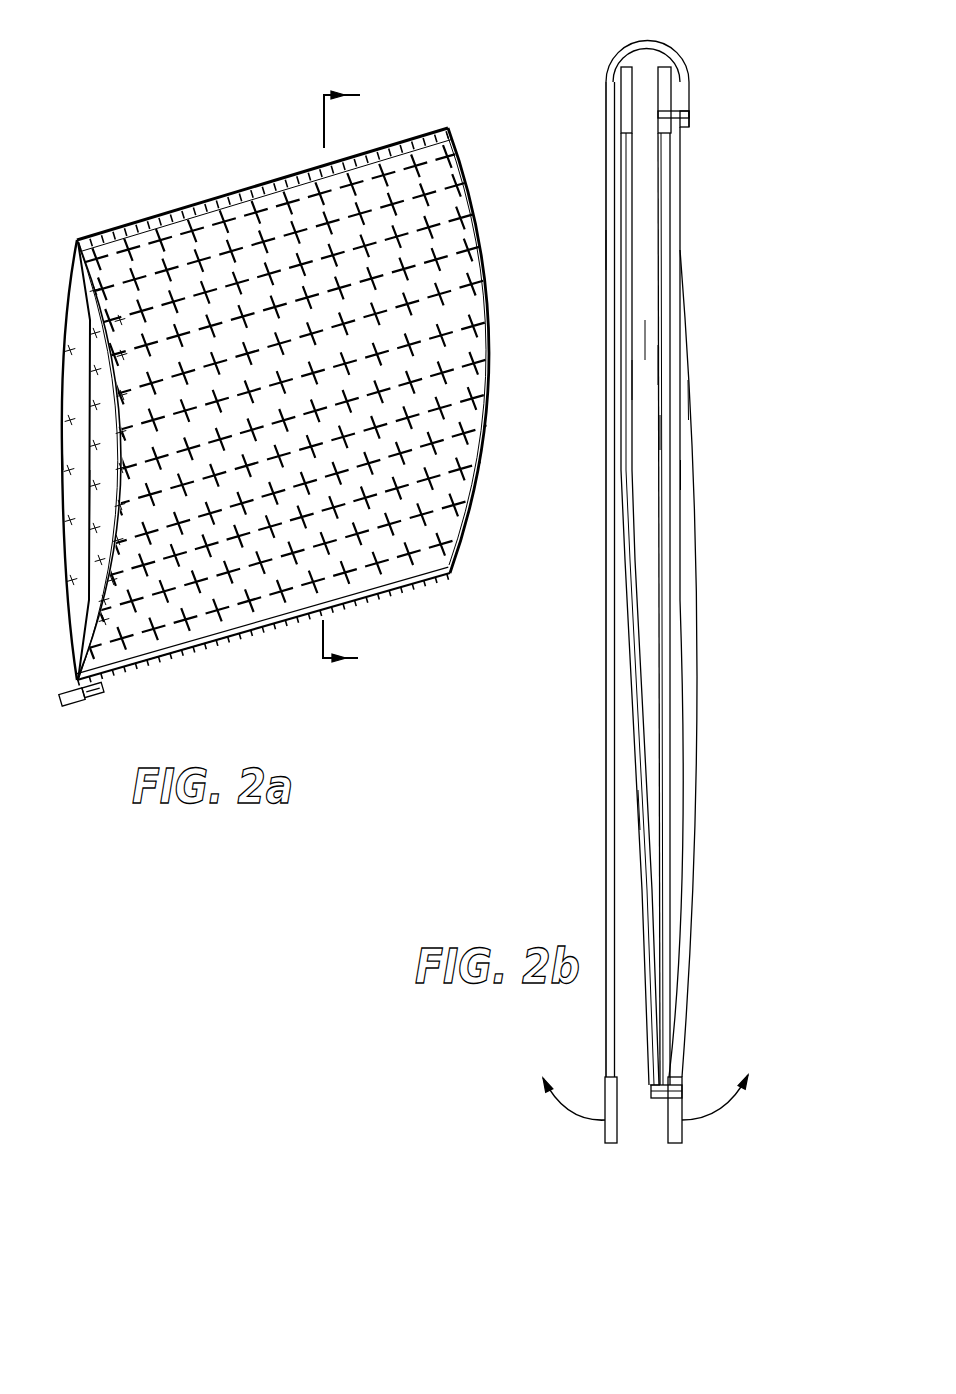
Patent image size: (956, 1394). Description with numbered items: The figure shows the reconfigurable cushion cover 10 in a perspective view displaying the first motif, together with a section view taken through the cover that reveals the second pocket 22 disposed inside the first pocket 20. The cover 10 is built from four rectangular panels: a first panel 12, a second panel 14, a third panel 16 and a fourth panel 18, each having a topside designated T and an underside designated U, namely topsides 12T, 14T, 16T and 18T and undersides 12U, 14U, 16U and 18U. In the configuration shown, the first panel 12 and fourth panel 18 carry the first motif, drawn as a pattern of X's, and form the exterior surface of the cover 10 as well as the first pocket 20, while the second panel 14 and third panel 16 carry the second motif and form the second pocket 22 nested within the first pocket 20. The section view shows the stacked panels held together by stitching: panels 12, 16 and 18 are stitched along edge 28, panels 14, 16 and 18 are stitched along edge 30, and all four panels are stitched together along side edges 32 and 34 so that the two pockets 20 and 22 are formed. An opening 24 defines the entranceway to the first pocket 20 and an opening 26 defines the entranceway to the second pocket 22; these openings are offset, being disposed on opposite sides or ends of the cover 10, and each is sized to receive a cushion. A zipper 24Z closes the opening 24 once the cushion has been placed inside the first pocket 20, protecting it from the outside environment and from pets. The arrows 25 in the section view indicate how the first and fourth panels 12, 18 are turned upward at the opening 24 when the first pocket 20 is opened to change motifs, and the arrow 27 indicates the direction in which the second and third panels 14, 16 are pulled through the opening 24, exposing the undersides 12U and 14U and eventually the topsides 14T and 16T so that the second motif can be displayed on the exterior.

In FIG. 2a, the cover 10 is at (83, 208).
In FIG. 2a, the first panel 12 is at (62, 393).
In FIG. 2b, the first panel 12 is at (612, 462).
In FIG. 2a, the topside of first panel 12T is at (62, 443).
In FIG. 2b, the topside of first panel 12T is at (607, 252).
In FIG. 2b, the underside of first panel 12U is at (620, 337).
In FIG. 2b, the second panel 14 is at (638, 710).
In FIG. 2b, the topside of second panel 14T is at (634, 397).
In FIG. 2b, the underside of second panel 14U is at (637, 800).
In FIG. 2b, the third panel 16 is at (663, 603).
In FIG. 2b, the topside of third panel 16T is at (658, 373).
In FIG. 2b, the underside of third panel 16U is at (672, 433).
In FIG. 2a, the fourth panel 18 is at (410, 250).
In FIG. 2b, the fourth panel 18 is at (695, 548).
In FIG. 2a, the topside of fourth panel 18T is at (472, 488).
In FIG. 2b, the topside of fourth panel 18T is at (688, 400).
In FIG. 2b, the underside of fourth panel 18U is at (677, 467).
In FIG. 2b, the first pocket 20 is at (623, 840).
In FIG. 2b, the second pocket 22 is at (647, 340).
In FIG. 2a, the opening 24 is at (277, 624).
In FIG. 2b, the opening 24 is at (642, 1127).
In FIG. 2a, the zipper 24Z is at (72, 708).
In FIG. 2b, the arrows 25 is at (653, 1080).
In FIG. 2b, the opening 26 is at (648, 80).
In FIG. 2b, the arrow 27 is at (630, 1035).
In FIG. 2a, the edge 28 is at (172, 215).
In FIG. 2b, the edge 28 is at (717, 80).
In FIG. 2a, the edge 30 is at (175, 655).
In FIG. 2b, the edge 30 is at (706, 1052).
In FIG. 2a, the side edge 32 is at (90, 500).
In FIG. 2a, the side edge 34 is at (492, 396).